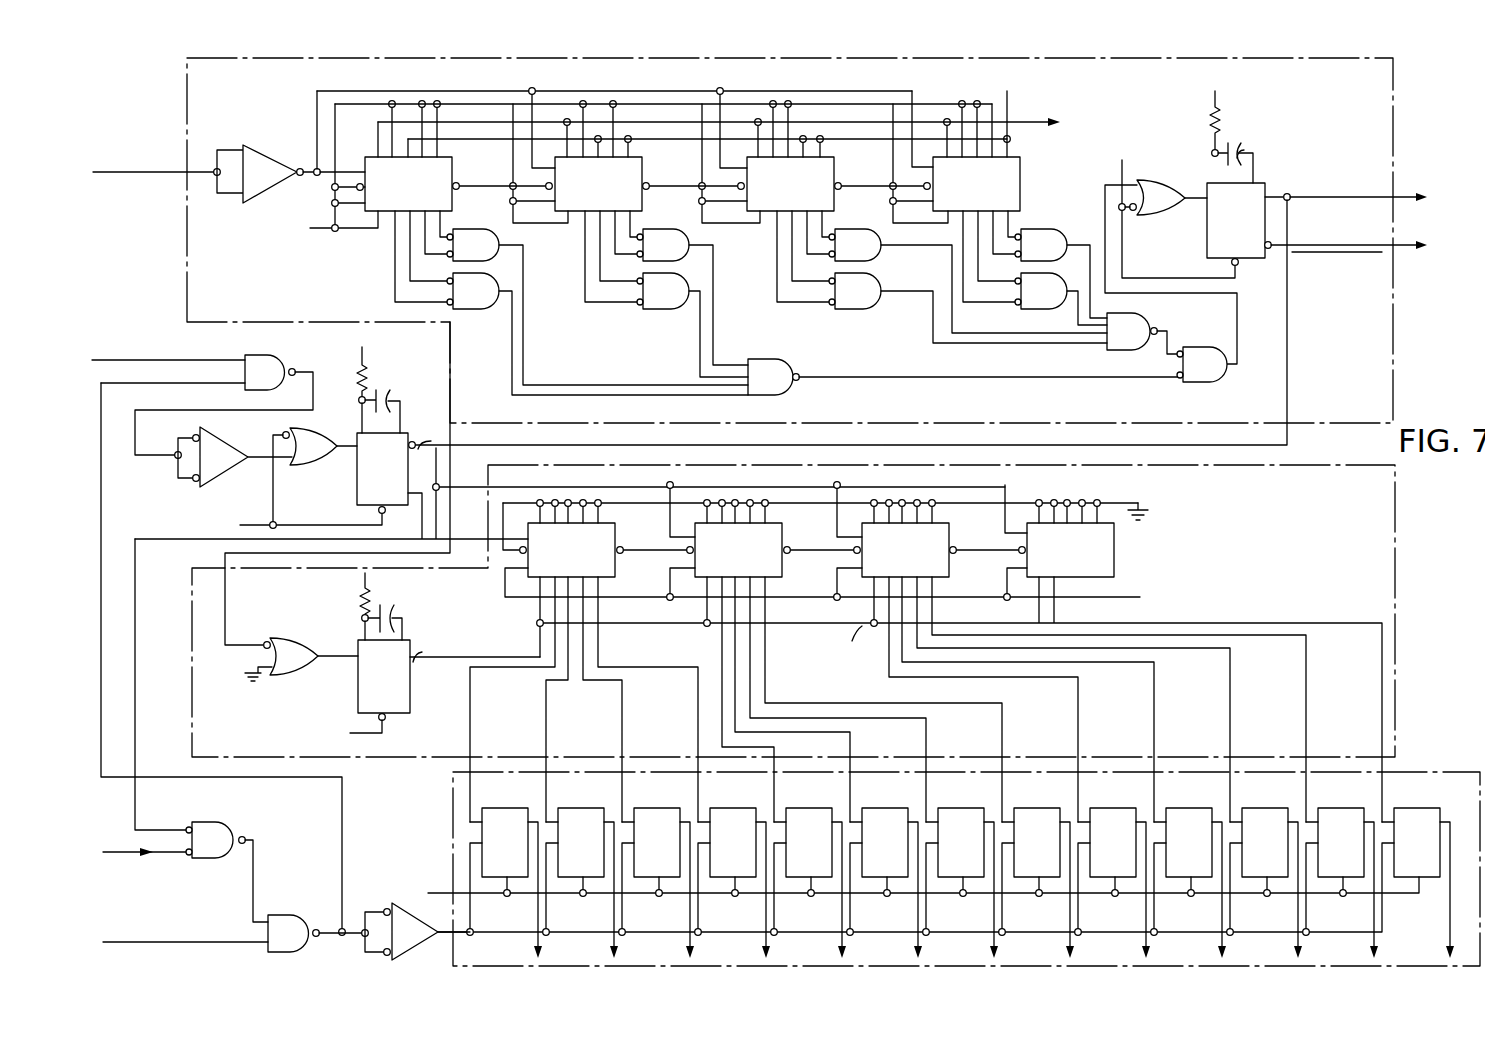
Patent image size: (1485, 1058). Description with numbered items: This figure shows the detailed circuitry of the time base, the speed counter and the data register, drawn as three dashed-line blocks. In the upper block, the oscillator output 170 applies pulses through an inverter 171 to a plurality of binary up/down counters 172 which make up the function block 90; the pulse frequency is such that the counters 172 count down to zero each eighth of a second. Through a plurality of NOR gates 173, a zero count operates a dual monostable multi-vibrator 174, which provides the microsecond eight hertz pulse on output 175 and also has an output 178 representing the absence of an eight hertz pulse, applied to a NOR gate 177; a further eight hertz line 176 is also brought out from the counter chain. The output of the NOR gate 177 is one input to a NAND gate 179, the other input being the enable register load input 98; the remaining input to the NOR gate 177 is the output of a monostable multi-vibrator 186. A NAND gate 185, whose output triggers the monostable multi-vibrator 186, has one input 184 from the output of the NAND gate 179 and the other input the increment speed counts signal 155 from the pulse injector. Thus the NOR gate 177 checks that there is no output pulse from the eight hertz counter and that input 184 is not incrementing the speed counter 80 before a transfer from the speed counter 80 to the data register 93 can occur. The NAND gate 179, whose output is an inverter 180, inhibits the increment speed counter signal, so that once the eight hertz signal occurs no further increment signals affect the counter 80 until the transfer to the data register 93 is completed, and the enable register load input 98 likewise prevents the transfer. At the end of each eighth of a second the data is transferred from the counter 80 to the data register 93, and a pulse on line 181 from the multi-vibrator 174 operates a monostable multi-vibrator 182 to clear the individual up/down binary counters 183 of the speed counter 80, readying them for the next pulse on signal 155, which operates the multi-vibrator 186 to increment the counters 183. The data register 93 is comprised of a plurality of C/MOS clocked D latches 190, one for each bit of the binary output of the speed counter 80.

The function block 90 is at (187, 64).
The speed counter 80 is at (489, 470).
The data register 93 is at (453, 790).
The oscillator output 170 is at (141, 172).
The inverter 171 is at (250, 148).
The binary up/down counters 172 is at (453, 166).
The NOR gates 173 is at (668, 268).
The dual monostable multi-vibrator 174 is at (1208, 247).
The output 175 is at (1398, 194).
The EIGHT Hz signal line 176 is at (1012, 121).
The NOR gate 177 is at (226, 824).
The output 178 is at (1398, 244).
The NAND gate 179 is at (289, 918).
The inverter 180 is at (404, 950).
The line 181 is at (1288, 428).
The monostable multi-vibrator 182 is at (410, 672).
The up/down binary counters 183 is at (616, 528).
The input 184 is at (101, 509).
The NAND gate 185 is at (282, 356).
The monostable multi-vibrator 186 is at (404, 436).
The C/MOS clocked D latches 190 is at (728, 808).
The increment speed counts signal 155 is at (232, 356).
The enable register load input 98 is at (150, 945).